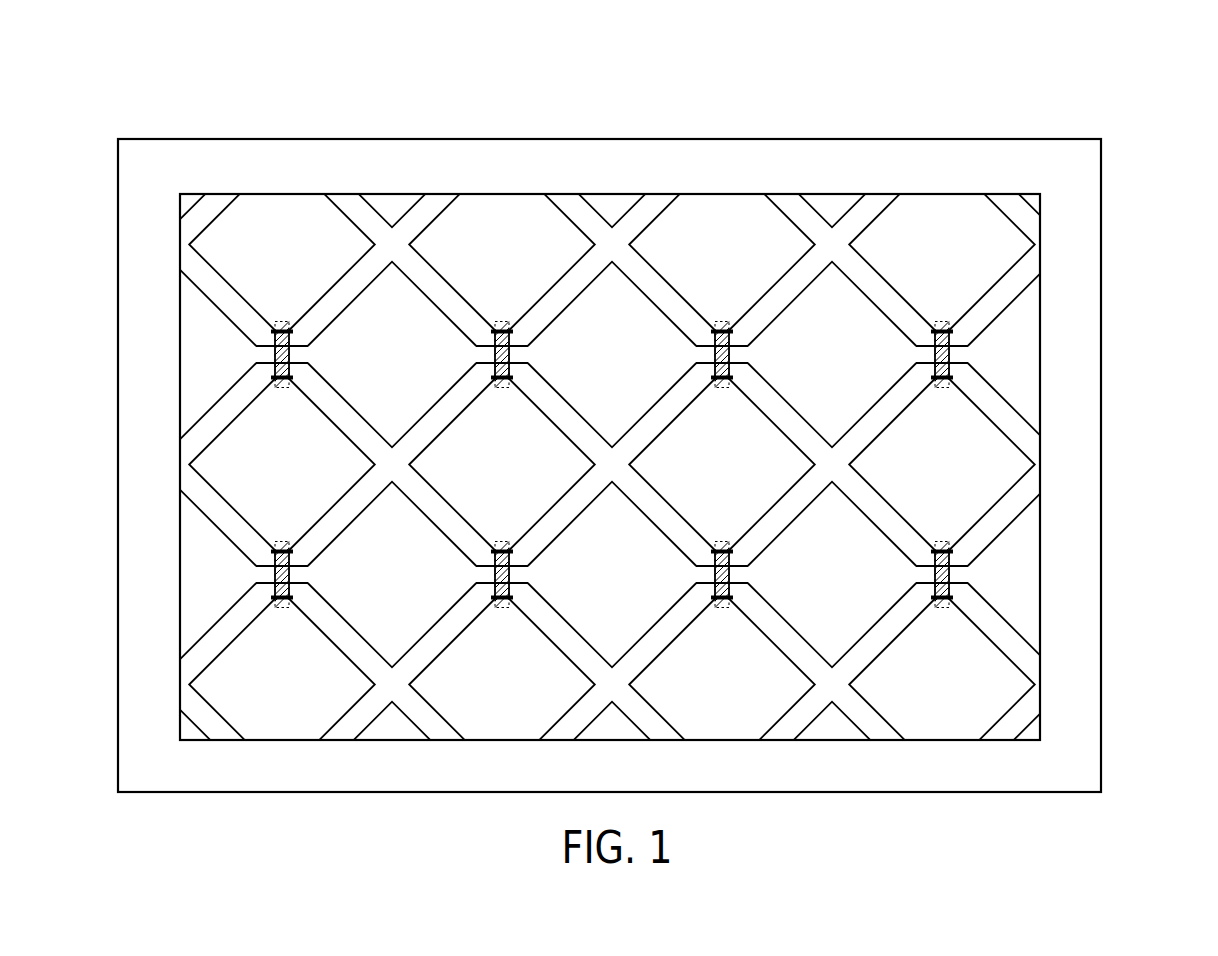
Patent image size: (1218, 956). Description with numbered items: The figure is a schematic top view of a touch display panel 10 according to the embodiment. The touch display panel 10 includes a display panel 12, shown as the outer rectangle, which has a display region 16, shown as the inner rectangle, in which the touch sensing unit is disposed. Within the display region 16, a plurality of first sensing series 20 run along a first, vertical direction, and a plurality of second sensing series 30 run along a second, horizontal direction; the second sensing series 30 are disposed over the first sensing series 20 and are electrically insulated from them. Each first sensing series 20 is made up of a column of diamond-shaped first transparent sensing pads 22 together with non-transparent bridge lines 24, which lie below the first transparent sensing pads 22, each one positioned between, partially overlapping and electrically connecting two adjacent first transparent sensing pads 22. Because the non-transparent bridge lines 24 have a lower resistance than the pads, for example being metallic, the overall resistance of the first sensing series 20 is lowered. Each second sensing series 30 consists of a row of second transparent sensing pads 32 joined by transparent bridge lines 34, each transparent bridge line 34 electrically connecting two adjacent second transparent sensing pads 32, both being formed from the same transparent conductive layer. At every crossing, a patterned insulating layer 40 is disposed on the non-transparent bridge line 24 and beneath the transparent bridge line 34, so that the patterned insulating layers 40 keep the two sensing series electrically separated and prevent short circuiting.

The touch display panel 10 is at (1112, 103).
The display panel 12 is at (1101, 228).
The display region 16 is at (1040, 297).
The first sensing series 20 is at (197, 137).
The first transparent sensing pad 22 is at (955, 696).
The non-transparent bridge line 24 is at (281, 322).
The second sensing series 30 is at (113, 265).
The second transparent sensing pad 32 is at (1033, 586).
The transparent bridge line 34 is at (268, 353).
The patterned insulating layer 40 is at (293, 337).